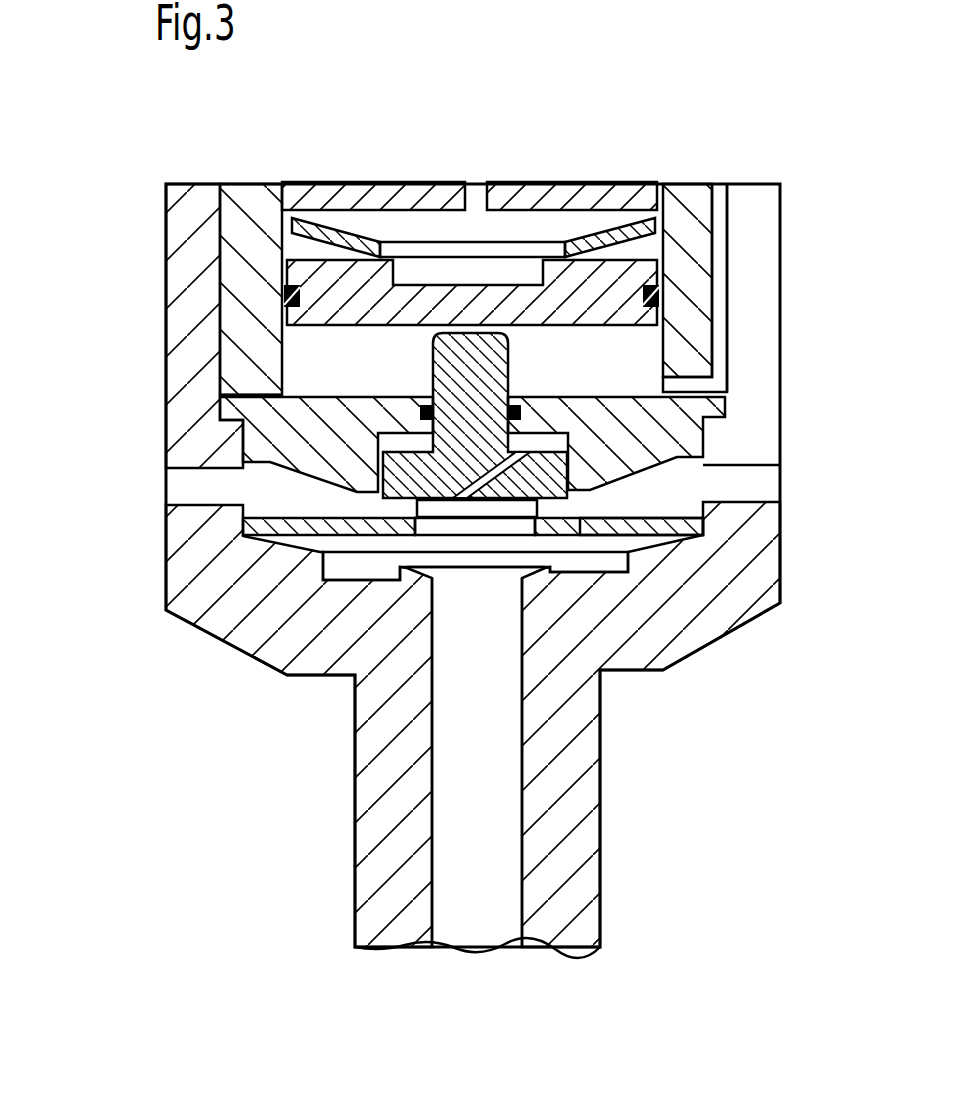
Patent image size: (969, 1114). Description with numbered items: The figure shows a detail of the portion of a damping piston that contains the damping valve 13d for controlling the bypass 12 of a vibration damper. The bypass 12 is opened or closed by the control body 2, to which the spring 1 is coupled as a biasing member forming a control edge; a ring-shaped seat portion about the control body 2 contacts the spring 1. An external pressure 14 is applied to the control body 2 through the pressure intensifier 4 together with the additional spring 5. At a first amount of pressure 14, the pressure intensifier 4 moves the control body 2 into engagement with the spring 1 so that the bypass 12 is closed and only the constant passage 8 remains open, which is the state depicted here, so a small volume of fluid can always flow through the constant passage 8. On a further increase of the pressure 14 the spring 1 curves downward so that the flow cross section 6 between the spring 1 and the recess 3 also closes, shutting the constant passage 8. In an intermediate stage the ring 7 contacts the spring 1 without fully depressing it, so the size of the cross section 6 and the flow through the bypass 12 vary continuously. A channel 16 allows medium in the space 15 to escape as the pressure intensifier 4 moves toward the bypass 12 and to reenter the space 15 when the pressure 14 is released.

The spring 1 is at (245, 522).
The control body 2 is at (495, 365).
The recess 3 is at (352, 583).
The pressure intensifier 4 is at (613, 270).
The additional spring 5 is at (290, 232).
The flow cross section 6 is at (405, 545).
The ring 7 is at (565, 508).
The constant passage 8 is at (622, 525).
The bypass 12 is at (450, 775).
The damping valve 13d is at (145, 322).
The external pressure 14 is at (474, 158).
The space 15 is at (310, 360).
The channel 16 is at (715, 200).